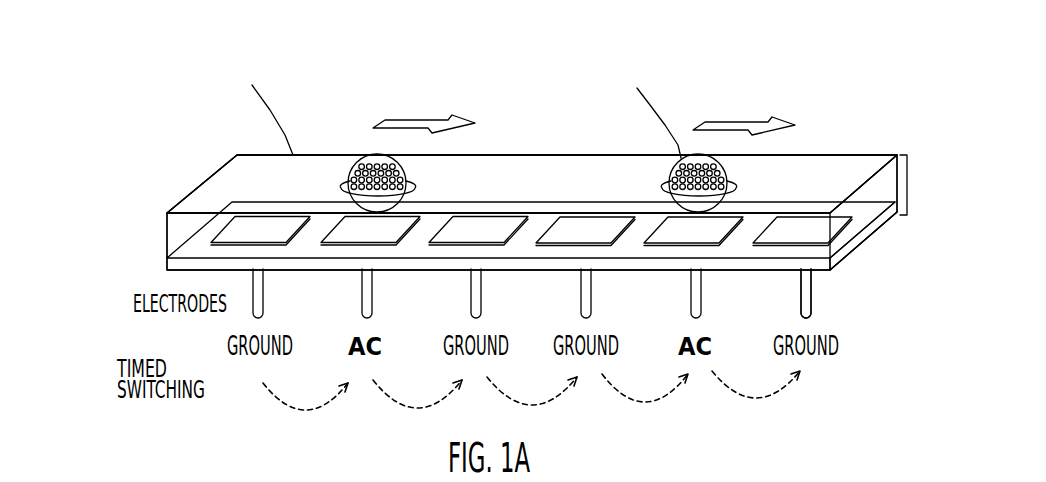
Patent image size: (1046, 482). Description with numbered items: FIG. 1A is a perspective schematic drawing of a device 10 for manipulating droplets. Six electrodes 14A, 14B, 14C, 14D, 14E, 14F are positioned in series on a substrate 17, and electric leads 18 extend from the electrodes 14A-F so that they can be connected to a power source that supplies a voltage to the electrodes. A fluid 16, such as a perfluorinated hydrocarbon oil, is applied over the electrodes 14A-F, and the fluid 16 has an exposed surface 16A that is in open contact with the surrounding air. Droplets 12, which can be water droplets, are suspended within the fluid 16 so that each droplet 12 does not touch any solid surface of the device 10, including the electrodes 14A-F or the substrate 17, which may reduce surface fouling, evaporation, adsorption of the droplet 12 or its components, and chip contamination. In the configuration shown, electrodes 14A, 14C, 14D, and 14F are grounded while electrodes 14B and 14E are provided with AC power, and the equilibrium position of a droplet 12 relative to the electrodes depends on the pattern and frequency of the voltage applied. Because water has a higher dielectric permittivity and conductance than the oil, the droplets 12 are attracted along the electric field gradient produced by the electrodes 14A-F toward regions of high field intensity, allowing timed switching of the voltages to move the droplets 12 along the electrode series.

The device 10 is at (516, 194).
The droplet 12 is at (352, 163).
The electrode 14A is at (238, 228).
The electrode 14B is at (347, 227).
The electrode 14C is at (477, 230).
The electrode 14D is at (598, 232).
The electrode 14E is at (716, 227).
The electrode 14F is at (800, 227).
The fluid 16 is at (907, 185).
The exposed surface 16A is at (569, 180).
The substrate 17 is at (855, 253).
The electric lead 18 is at (813, 300).